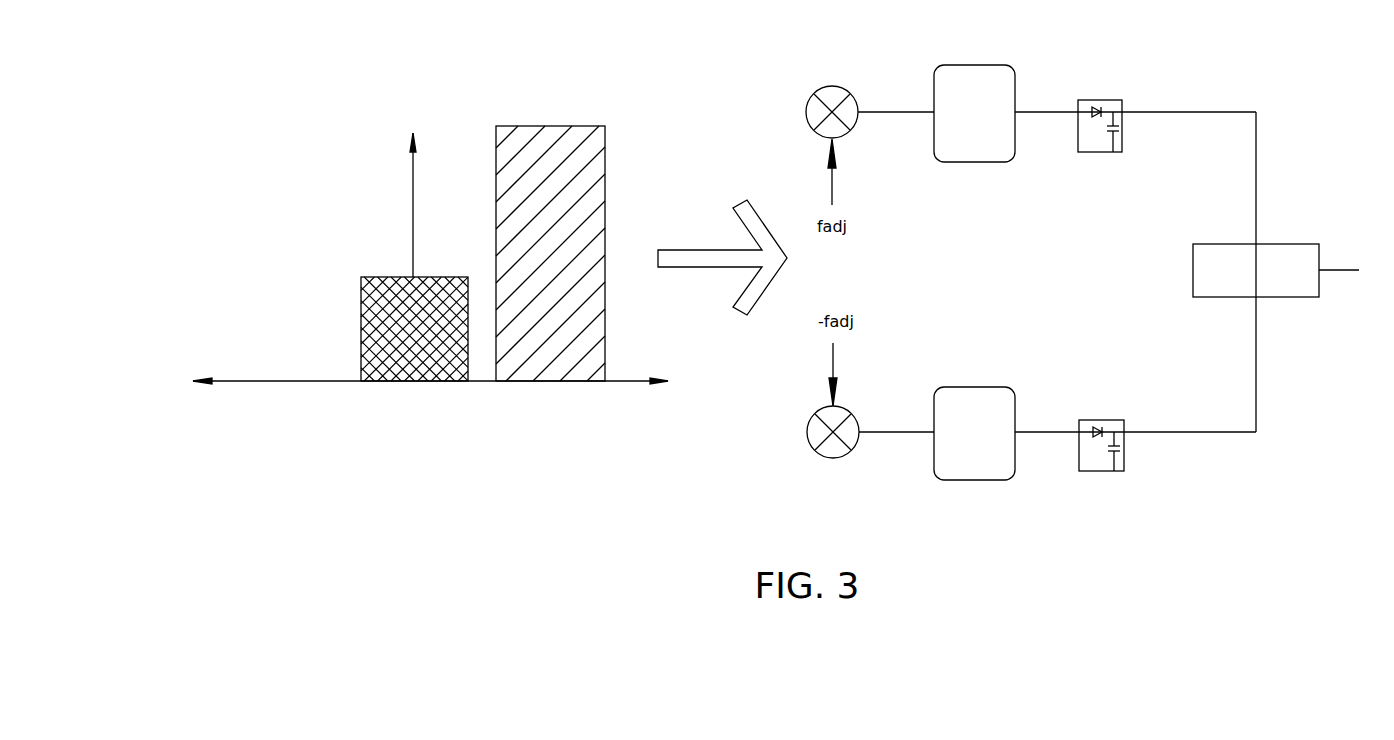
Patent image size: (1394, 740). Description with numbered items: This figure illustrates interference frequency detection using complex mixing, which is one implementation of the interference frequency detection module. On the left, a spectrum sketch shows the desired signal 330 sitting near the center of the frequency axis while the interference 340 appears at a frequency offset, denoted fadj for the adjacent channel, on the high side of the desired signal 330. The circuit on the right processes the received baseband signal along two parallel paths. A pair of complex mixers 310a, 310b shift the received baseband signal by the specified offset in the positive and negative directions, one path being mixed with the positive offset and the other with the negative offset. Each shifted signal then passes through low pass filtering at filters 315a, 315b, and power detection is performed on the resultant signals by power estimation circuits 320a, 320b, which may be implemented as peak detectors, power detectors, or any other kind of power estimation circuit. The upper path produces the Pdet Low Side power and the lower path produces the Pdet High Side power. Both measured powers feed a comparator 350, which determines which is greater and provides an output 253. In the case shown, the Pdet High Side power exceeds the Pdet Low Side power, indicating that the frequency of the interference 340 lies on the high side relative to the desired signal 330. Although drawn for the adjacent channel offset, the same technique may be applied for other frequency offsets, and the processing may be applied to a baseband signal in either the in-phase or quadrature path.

The desired signal 330 is at (393, 277).
The interference 340 is at (605, 200).
The complex mixer 310a is at (806, 112).
The complex mixer 310b is at (807, 432).
The filter 315a is at (973, 65).
The filter 315b is at (973, 387).
The power estimation circuit 320a is at (1098, 100).
The power estimation circuit 320b is at (1098, 420).
The comparator 350 is at (1283, 244).
The output 253 is at (1359, 270).